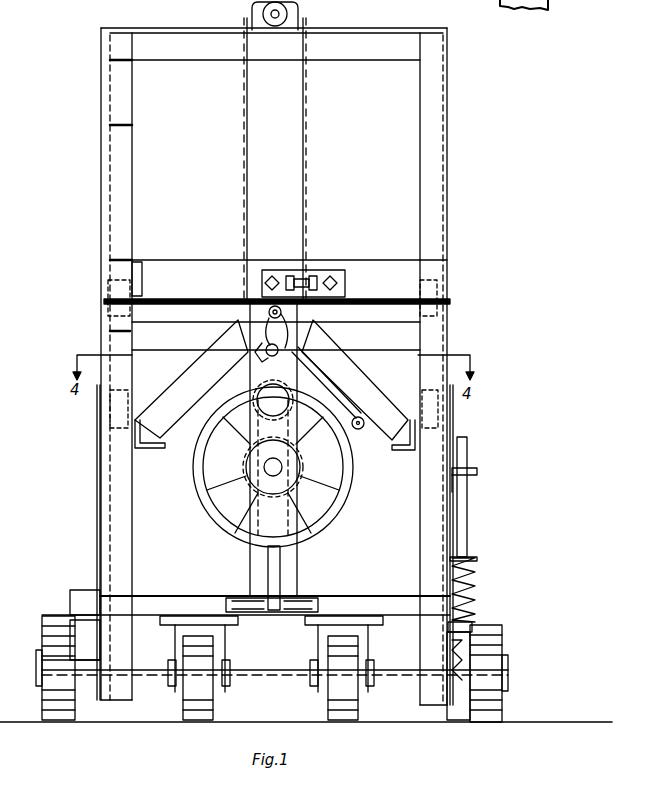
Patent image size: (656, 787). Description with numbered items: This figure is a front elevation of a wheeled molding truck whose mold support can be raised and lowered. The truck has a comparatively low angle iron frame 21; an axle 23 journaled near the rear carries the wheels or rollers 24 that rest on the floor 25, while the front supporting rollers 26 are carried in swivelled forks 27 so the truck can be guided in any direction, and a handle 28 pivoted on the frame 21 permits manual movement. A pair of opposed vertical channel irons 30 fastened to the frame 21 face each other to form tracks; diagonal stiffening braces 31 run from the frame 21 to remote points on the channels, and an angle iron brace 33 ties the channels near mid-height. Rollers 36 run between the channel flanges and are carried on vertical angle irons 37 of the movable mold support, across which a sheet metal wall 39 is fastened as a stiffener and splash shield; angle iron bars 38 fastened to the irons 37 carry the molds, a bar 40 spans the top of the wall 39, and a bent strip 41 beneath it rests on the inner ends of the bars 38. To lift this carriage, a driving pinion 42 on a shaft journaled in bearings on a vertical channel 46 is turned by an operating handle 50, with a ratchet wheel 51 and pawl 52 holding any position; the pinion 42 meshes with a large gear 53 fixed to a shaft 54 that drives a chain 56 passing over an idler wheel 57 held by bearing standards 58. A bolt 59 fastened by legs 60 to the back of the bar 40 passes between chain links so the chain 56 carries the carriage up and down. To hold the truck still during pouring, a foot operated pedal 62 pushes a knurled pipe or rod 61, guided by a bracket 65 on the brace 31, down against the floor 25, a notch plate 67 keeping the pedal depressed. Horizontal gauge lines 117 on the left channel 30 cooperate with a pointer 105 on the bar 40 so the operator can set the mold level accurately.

The frame 21 is at (357, 595).
The axle 23 is at (453, 720).
The wheel or roller 24 is at (57, 724).
The floor 25 is at (585, 722).
The front supporting roller 26 is at (197, 722).
The swivelled fork 27 is at (325, 660).
The handle 28 is at (282, 580).
The vertical channel iron 30 is at (437, 348).
The stiffening brace 31 is at (452, 412).
The brace 33 is at (182, 298).
The roller 36 is at (118, 292).
The vertical angle iron 37 is at (135, 377).
The bar 38 is at (150, 450).
The sheet metal wall 39 is at (190, 422).
The bar 40 is at (396, 275).
The bent strip 41 is at (368, 366).
The driving pinion 42 is at (250, 398).
The vertical channel 46 is at (300, 560).
The operating handle 50 is at (359, 430).
The ratchet wheel 51 is at (296, 350).
The pawl 52 is at (312, 345).
The large gear 53 is at (238, 495).
The shaft 54 is at (282, 466).
The chain 56 is at (305, 190).
The idler wheel 57 is at (296, 14).
The bearing standard 58 is at (250, 10).
The bolt 59 is at (272, 280).
The leg 60 is at (306, 278).
The pipe or rod 61 is at (468, 527).
The foot operated pedal 62 is at (490, 626).
The bracket 65 is at (472, 472).
The notch plate 67 is at (470, 648).
The pointer 105 is at (137, 262).
The horizontal gauge line 117 is at (122, 62).